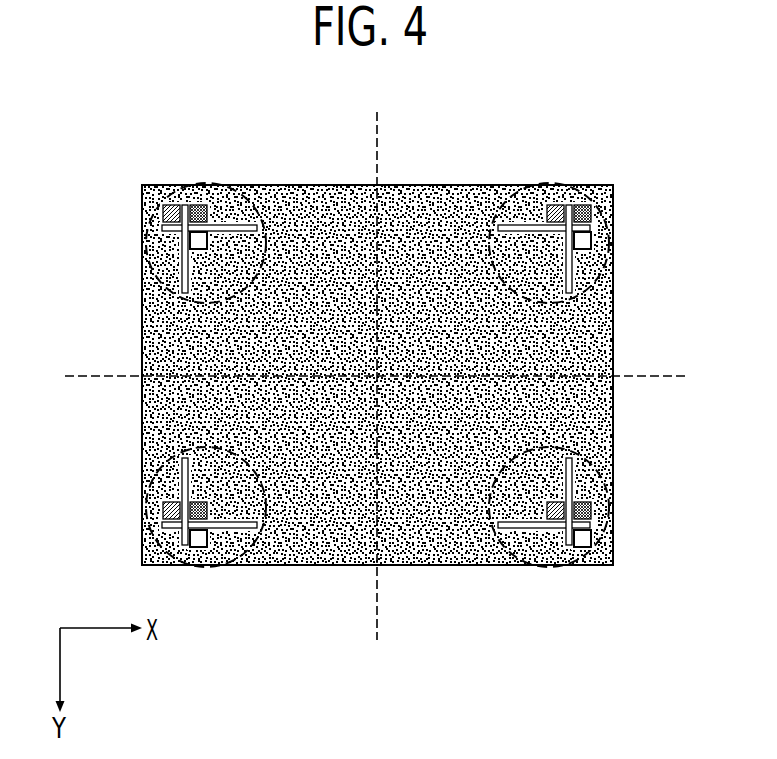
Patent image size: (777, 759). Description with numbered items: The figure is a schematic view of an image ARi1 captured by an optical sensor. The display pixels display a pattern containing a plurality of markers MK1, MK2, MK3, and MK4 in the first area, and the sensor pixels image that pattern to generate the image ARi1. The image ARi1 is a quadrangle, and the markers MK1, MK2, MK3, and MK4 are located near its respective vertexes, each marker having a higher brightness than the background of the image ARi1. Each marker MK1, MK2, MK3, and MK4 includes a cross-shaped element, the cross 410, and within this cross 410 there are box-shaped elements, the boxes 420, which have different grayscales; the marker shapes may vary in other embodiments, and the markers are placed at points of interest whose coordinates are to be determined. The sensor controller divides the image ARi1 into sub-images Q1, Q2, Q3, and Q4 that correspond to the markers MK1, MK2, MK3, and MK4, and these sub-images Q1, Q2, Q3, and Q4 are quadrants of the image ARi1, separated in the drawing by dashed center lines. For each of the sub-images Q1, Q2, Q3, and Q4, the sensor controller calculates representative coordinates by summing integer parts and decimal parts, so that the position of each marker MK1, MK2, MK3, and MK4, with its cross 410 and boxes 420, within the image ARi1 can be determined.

The image ARi1 is at (430, 163).
The marker MK1 is at (243, 185).
The marker MK2 is at (586, 214).
The marker MK3 is at (243, 565).
The marker MK4 is at (586, 549).
The sub-image Q1 is at (305, 185).
The sub-image Q2 is at (613, 307).
The sub-image Q3 is at (305, 565).
The sub-image Q4 is at (613, 440).
The cross figure 410 is at (572, 265).
The box figures 420 is at (591, 507).